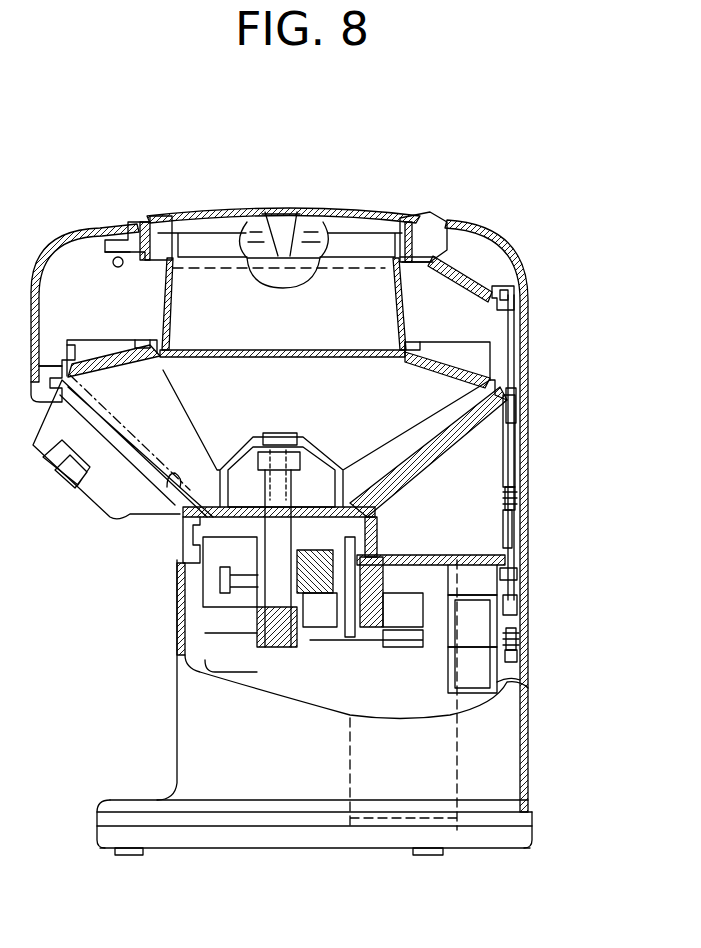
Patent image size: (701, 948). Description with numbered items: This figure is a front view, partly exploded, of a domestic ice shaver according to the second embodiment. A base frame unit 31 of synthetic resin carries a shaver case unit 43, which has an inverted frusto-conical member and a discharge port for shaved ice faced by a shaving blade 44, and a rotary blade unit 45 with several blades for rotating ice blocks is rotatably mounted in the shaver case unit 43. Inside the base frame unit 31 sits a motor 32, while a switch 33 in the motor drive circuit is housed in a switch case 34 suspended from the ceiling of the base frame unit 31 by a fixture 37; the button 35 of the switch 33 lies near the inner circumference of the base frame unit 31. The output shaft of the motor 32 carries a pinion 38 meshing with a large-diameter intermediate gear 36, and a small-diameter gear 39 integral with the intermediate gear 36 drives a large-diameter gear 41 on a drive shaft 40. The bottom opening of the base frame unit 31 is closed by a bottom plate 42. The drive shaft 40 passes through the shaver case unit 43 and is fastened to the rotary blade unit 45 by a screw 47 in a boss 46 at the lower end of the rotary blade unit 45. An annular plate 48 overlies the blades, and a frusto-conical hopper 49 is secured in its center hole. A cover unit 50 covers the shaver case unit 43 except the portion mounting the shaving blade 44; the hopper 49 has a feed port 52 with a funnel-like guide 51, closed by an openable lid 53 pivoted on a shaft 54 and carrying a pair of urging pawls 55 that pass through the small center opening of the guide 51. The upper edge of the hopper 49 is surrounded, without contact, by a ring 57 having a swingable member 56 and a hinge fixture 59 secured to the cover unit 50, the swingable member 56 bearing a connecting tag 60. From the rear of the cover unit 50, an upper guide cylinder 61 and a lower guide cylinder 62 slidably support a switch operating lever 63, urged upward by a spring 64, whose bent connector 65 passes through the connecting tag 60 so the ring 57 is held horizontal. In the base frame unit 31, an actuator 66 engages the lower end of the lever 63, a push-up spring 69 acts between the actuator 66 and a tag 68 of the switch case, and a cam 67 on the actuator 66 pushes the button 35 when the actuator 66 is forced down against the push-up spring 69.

The base frame unit 31 is at (175, 735).
The motor 32 is at (350, 690).
The switch 33 is at (480, 620).
The switch case 34 is at (505, 683).
The button 35 is at (483, 613).
The intermediate gear 36 is at (377, 613).
The fixture 37 is at (467, 575).
The pinion 38 is at (415, 595).
The small-diameter gear 39 is at (370, 580).
The drive shaft 40 is at (279, 640).
The large-diameter gear 41 is at (222, 585).
The bottom plate 42 is at (178, 835).
The shaver case unit 43 is at (531, 453).
The shaving blade 44 is at (163, 500).
The rotary blade unit 45 is at (441, 355).
The boss 46 is at (270, 440).
The screw 47 is at (253, 483).
The annular plate 48 is at (93, 341).
The hopper 49 is at (165, 320).
The cover unit 50 is at (482, 226).
The funnel-like guide 51 is at (203, 252).
The feed port 52 is at (148, 222).
The openable lid 53 is at (210, 212).
The shaft 54 is at (408, 218).
The urging pawls 55 is at (280, 225).
The swingable member 56 is at (441, 257).
The ring 57 is at (302, 250).
The fixture 59 is at (107, 252).
The connecting tag 60 is at (482, 278).
The guide cylinder 61 is at (503, 418).
The guide cylinder 62 is at (529, 520).
The switch operating lever 63 is at (514, 440).
The spring 64 is at (514, 492).
The bent connector 65 is at (514, 296).
The actuator 66 is at (517, 578).
The cam 67 is at (520, 612).
The tag 68 is at (520, 660).
The push-up spring 69 is at (522, 640).